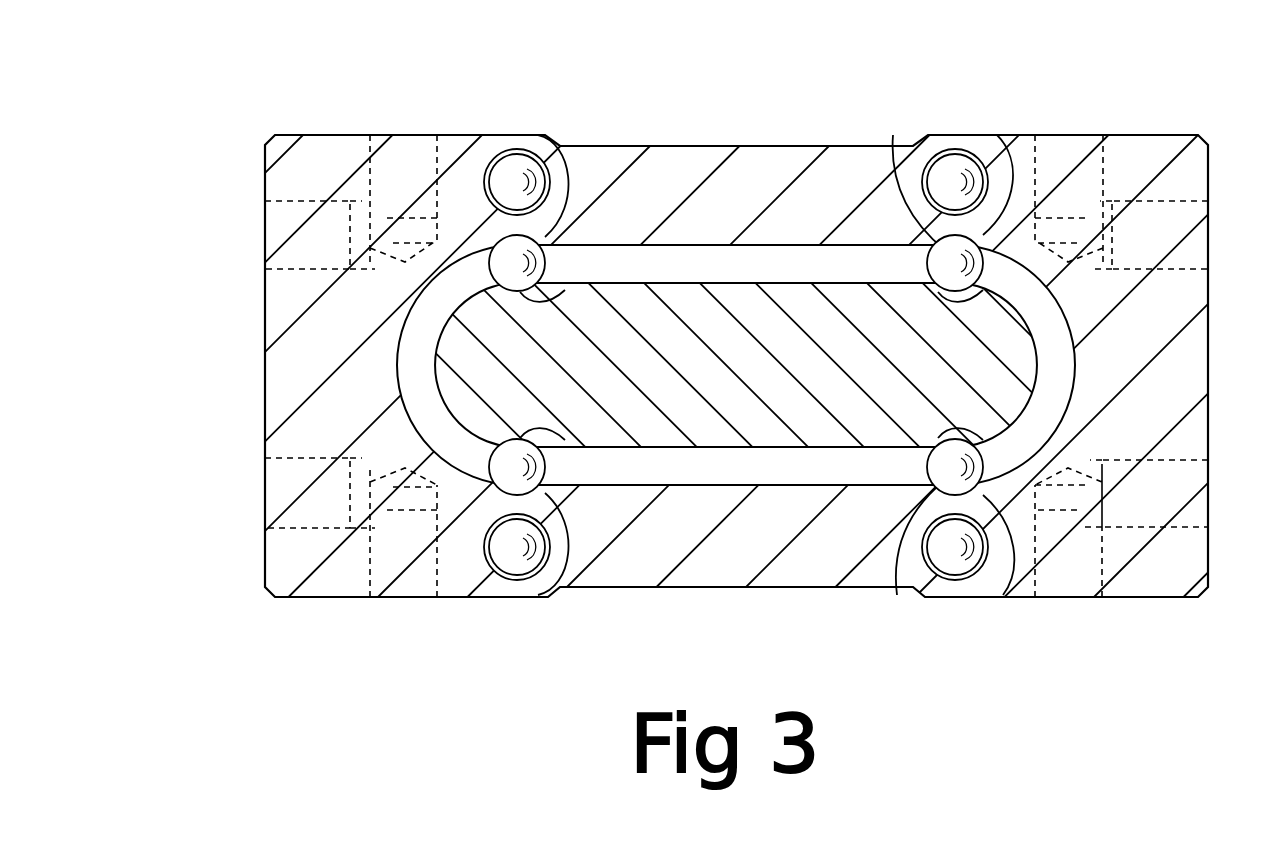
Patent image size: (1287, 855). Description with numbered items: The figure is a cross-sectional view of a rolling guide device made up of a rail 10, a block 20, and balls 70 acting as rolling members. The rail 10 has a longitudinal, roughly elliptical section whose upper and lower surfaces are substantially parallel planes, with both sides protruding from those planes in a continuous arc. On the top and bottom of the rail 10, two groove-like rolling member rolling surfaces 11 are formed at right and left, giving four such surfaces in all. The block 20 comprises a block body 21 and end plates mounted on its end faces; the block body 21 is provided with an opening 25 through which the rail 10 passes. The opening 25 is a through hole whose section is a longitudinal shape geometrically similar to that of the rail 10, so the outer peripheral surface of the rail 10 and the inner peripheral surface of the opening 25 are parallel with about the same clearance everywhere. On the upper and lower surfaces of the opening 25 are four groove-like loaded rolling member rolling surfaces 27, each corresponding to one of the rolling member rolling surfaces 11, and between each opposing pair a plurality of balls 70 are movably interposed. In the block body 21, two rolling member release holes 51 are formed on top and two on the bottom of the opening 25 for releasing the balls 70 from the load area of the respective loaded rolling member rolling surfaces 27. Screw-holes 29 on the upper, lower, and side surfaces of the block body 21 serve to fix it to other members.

The rail 10 is at (648, 276).
The rolling member rolling surface 11 is at (560, 285).
The block 20 is at (800, 133).
The block body 21 is at (1147, 150).
The opening 25 is at (692, 262).
The loaded rolling member rolling surface 27 is at (522, 250).
The screw-hole 29 is at (409, 150).
The rolling member release hole 51 is at (492, 153).
The ball 70 is at (522, 165).